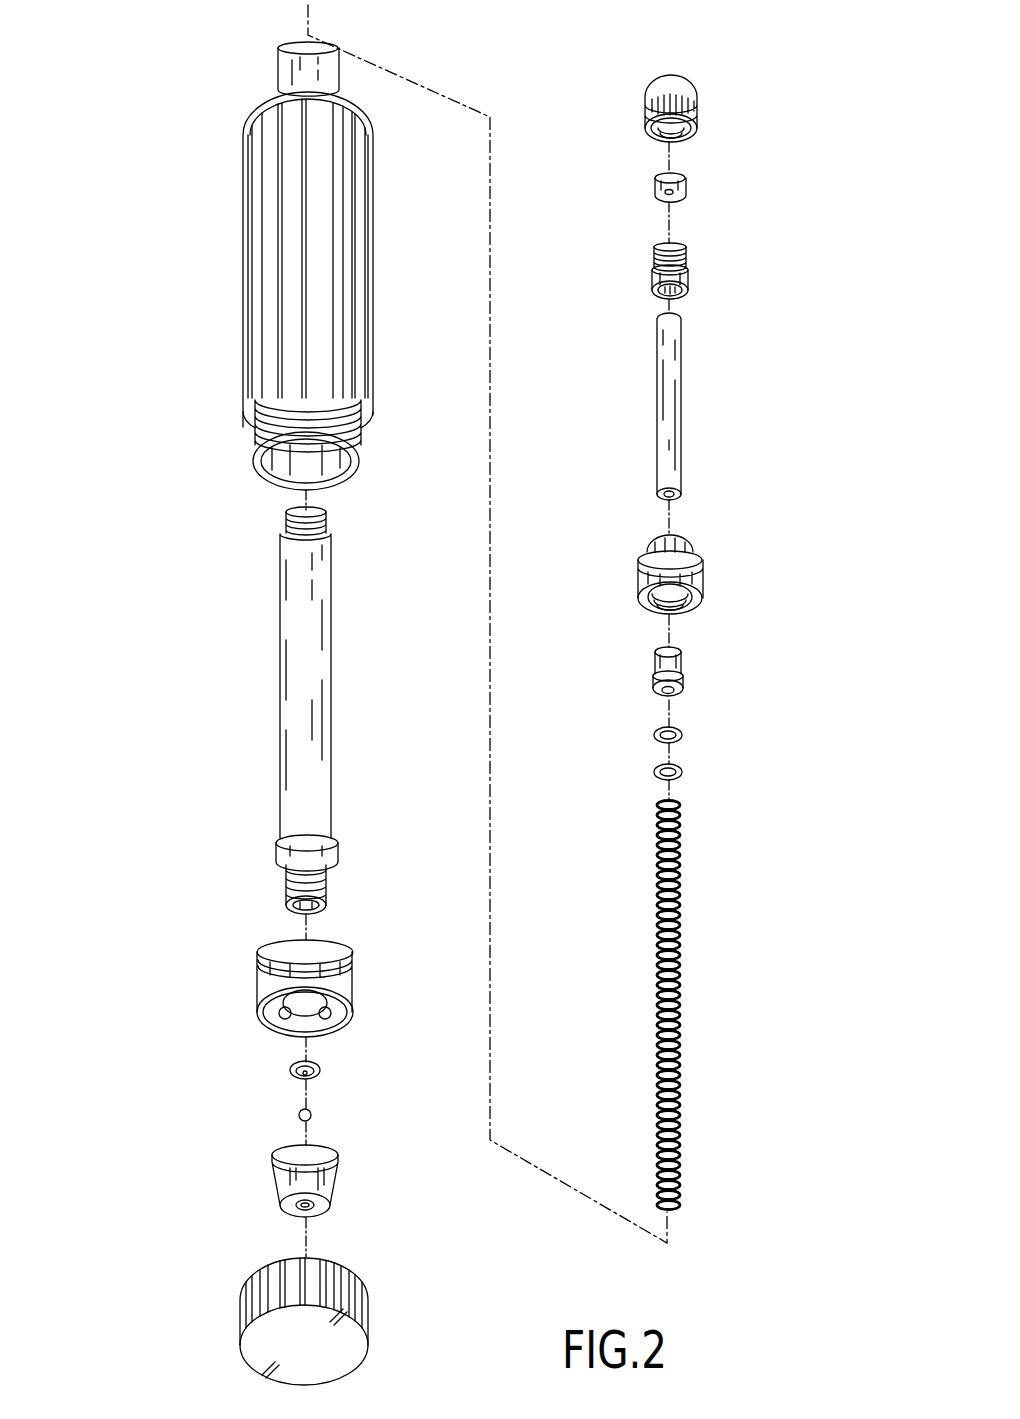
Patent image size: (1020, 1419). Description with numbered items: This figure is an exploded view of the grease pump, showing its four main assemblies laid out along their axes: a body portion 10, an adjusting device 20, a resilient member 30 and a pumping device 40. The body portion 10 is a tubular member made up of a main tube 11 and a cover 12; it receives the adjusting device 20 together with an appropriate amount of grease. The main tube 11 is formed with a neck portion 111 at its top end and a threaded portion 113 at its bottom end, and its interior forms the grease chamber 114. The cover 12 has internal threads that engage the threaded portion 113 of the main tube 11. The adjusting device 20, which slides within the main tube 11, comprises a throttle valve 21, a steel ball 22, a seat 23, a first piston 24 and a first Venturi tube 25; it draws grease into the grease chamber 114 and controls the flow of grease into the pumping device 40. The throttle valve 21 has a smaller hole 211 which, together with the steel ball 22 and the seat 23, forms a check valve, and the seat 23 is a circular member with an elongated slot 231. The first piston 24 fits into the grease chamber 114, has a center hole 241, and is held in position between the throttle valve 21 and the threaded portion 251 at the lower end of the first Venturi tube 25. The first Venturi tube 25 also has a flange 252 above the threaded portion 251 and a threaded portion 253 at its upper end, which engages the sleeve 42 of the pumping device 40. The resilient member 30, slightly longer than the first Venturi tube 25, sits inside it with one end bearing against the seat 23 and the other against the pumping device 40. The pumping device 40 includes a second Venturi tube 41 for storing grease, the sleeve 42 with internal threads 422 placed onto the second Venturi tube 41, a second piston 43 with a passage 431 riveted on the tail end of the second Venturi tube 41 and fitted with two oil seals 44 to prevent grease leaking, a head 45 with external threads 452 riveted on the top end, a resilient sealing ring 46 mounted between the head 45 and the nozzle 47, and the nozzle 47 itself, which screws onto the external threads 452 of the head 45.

The body portion 10 is at (158, 430).
The main tube 11 is at (373, 270).
The neck portion 111 is at (296, 36).
The threaded portion 113 is at (248, 440).
The grease chamber 114 is at (334, 470).
The cover 12 is at (370, 1310).
The adjusting device 20 is at (170, 915).
The throttle valve 21 is at (336, 1185).
The smaller hole 211 is at (300, 1208).
The steel ball 22 is at (312, 1114).
The seat 23 is at (320, 1072).
The elongated slot 231 is at (300, 1074).
The first piston 24 is at (348, 975).
The center hole 241 is at (283, 1018).
The first Venturi tube 25 is at (331, 658).
The threaded portion 251 is at (287, 890).
The flange 252 is at (338, 860).
The threaded portion 253 is at (288, 520).
The resilient member 30 is at (682, 972).
The pumping device 40 is at (735, 437).
The second Venturi tube 41 is at (683, 408).
The sleeve 42 is at (705, 567).
The internal threads 422 is at (652, 605).
The second piston 43 is at (685, 660).
The passage 431 is at (665, 694).
The oil seals 44 is at (684, 735).
The head 45 is at (692, 265).
The external threads 452 is at (655, 255).
The sealing ring 46 is at (688, 184).
The nozzle 47 is at (698, 95).